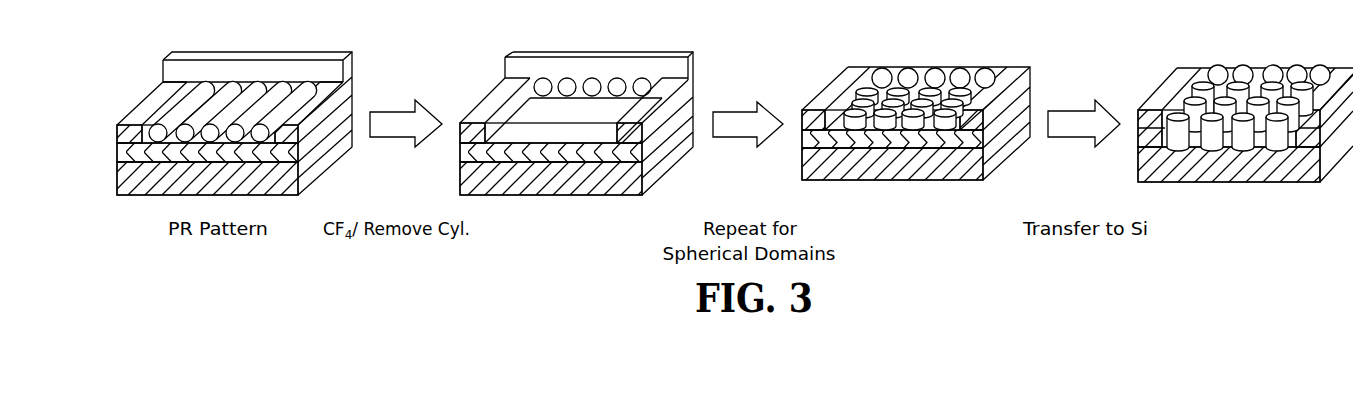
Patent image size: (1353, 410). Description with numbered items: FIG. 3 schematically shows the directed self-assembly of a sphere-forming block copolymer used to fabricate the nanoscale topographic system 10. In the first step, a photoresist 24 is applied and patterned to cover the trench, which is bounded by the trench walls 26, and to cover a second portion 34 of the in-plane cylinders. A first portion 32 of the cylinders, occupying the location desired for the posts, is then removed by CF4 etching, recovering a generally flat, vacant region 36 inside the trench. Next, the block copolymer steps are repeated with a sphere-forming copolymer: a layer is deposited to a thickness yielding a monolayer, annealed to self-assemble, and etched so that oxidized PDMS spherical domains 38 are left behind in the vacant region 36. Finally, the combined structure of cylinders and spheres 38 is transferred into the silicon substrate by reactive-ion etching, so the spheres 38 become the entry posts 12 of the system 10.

The nanoscale topographic system 10 is at (1244, 114).
The entry posts 12 is at (1273, 130).
The photoresist 24 is at (203, 66).
The trench walls 26 is at (145, 105).
The first portion of the cylinders 32 is at (155, 133).
The second portion of the in-plane cylinders 34 is at (592, 85).
The vacant region 36 is at (568, 130).
The spherical domains 38 is at (910, 127).